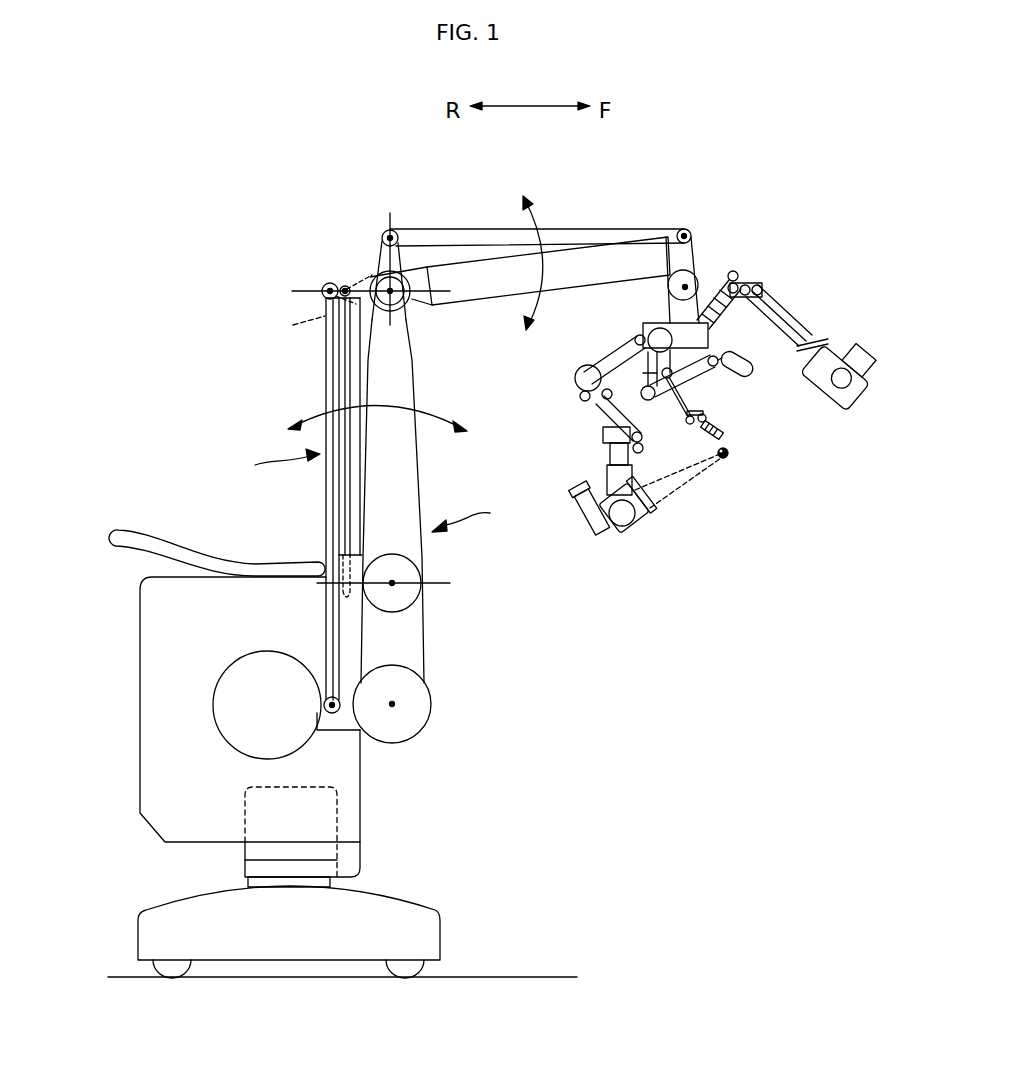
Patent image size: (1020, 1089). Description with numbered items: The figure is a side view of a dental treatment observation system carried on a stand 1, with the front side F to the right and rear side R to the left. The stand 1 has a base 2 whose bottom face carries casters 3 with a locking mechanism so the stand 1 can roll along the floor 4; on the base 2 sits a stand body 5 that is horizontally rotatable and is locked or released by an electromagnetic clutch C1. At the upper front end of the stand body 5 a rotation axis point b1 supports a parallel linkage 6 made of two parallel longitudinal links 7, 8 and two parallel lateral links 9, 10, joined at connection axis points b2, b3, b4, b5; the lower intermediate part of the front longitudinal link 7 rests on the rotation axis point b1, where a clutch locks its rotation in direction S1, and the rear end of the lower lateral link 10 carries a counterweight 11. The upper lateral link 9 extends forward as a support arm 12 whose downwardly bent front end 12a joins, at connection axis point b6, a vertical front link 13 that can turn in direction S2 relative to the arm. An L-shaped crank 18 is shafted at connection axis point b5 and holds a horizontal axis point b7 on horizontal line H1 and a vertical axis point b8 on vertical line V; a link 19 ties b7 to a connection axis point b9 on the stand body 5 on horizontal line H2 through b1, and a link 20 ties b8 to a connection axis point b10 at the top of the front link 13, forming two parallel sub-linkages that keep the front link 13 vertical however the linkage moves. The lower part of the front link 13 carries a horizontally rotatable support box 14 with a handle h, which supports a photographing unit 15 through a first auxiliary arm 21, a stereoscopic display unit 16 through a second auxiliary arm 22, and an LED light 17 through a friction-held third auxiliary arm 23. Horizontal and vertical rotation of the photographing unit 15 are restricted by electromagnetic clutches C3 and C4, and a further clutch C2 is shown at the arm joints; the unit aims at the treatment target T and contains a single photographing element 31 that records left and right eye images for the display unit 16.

The stand 1 is at (470, 516).
The base 2 is at (408, 898).
The casters 3 is at (172, 978).
The floor 4 is at (487, 977).
The stand body 5 is at (140, 657).
The parallel linkage 6 is at (278, 463).
The longitudinal link 7 is at (418, 450).
The longitudinal link 8 is at (325, 370).
The upper lateral link 9 is at (301, 324).
The lower lateral link 10 is at (348, 732).
The counterweight 11 is at (219, 728).
The support arm 12 is at (612, 258).
The front end 12a is at (700, 270).
The front link 13 is at (707, 312).
The support box 14 is at (644, 323).
The photographing unit 15 is at (640, 520).
The stereoscopic display unit 16 is at (857, 400).
The LED light 17 is at (720, 428).
The crank 18 is at (380, 246).
The link 19 is at (340, 516).
The link 20 is at (508, 230).
The first auxiliary arm 21 is at (603, 351).
The second auxiliary arm 22 is at (795, 299).
The third auxiliary arm 23 is at (708, 376).
The photographing element 31 is at (582, 497).
The rotation axis point b1 is at (404, 598).
The connection axis point b2 is at (324, 284).
The connection axis point b3 is at (330, 713).
The connection axis point b4 is at (394, 704).
The connection axis point b5 is at (398, 305).
The connection axis point b6 is at (670, 287).
The horizontal axis point b7 is at (344, 286).
The vertical axis point b8 is at (398, 236).
The connection axis point b9 is at (335, 595).
The connection axis point b10 is at (688, 232).
The electromagnetic clutch C1 is at (243, 813).
The joint C2 is at (574, 380).
The electromagnetic clutch C3 is at (603, 435).
The electromagnetic clutch C4 is at (622, 527).
The horizontal line H1 is at (356, 292).
The horizontal line H2 is at (399, 582).
The direction S1 is at (432, 402).
The direction S2 is at (540, 226).
The treatment target T is at (724, 462).
The vertical line V is at (389, 255).
The handle h is at (750, 375).